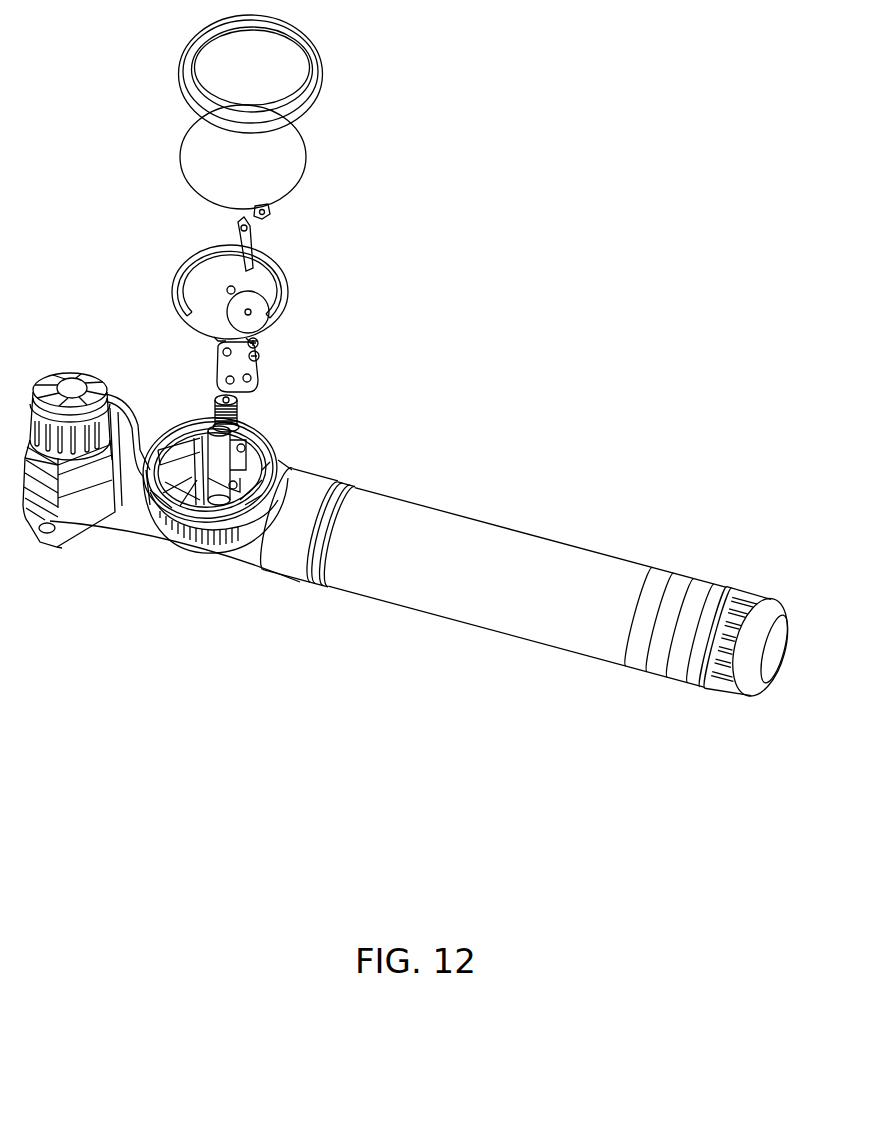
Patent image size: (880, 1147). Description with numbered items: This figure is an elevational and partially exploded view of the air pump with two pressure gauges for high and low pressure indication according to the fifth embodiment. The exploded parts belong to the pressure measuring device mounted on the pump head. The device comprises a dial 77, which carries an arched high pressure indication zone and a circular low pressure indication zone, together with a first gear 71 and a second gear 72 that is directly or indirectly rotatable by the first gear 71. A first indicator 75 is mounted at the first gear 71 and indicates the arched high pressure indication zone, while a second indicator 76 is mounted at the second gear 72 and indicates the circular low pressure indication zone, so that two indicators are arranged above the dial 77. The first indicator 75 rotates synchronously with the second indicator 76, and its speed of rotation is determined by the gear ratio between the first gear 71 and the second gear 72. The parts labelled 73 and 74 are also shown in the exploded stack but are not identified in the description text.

The first gear 71 is at (208, 414).
The second gear 72 is at (245, 430).
The mounting plate 73 is at (212, 395).
The screw 74 is at (245, 428).
The first indicator 75 is at (235, 232).
The second indicator 76 is at (268, 213).
The dial 77 is at (288, 284).